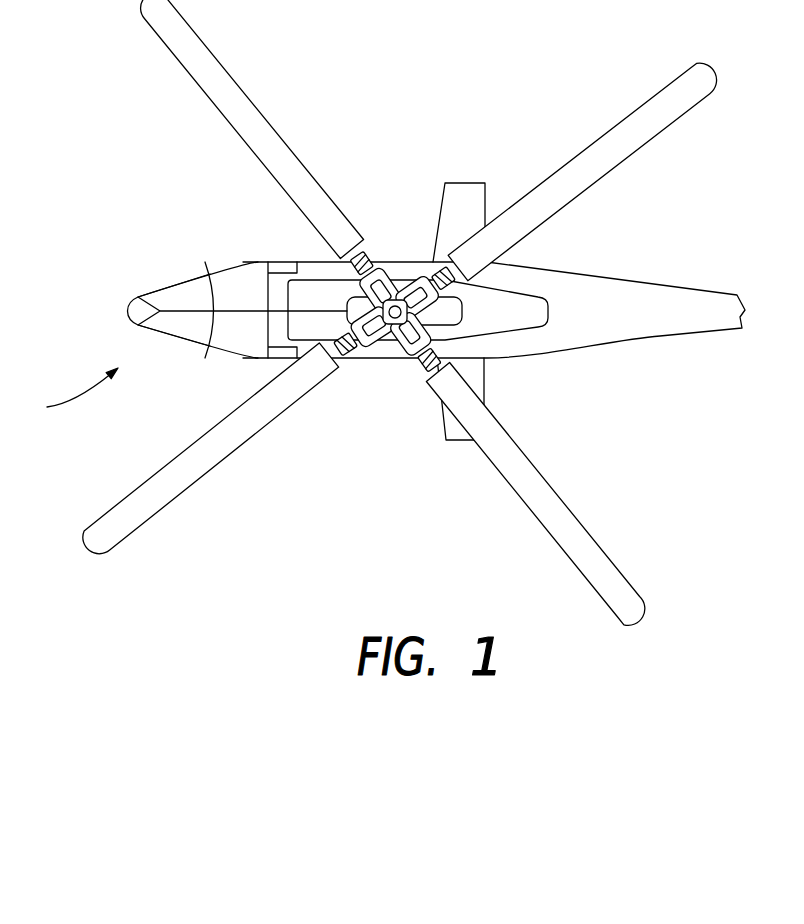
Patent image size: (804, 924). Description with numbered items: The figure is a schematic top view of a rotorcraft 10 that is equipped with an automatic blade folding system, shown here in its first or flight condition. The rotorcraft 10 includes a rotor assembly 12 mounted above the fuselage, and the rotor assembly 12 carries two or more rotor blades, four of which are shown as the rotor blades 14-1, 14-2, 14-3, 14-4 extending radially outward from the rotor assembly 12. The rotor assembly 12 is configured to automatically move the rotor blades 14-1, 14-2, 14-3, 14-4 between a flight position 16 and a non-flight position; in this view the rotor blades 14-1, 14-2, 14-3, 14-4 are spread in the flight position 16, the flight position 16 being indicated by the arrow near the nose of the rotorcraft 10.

The rotorcraft 10 is at (128, 303).
The rotor assembly 12 is at (393, 284).
The rotor blade 14-1 is at (594, 184).
The rotor blade 14-2 is at (218, 110).
The rotor blade 14-3 is at (208, 471).
The rotor blade 14-4 is at (543, 476).
The flight position 16 is at (70, 394).